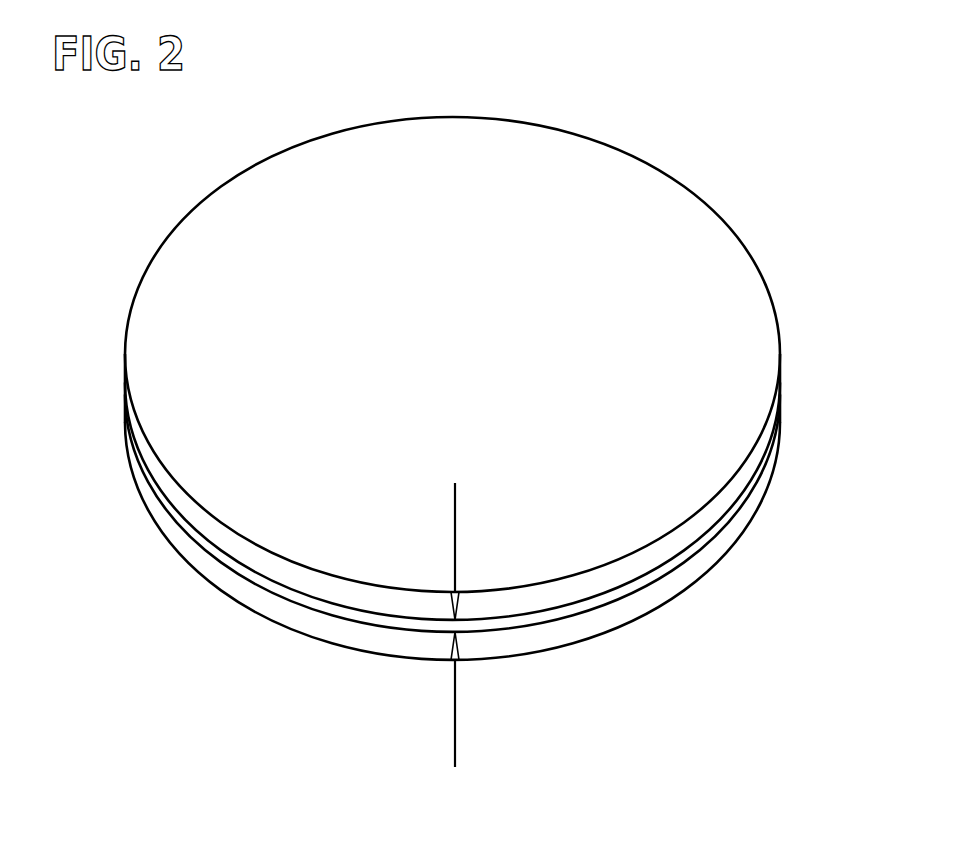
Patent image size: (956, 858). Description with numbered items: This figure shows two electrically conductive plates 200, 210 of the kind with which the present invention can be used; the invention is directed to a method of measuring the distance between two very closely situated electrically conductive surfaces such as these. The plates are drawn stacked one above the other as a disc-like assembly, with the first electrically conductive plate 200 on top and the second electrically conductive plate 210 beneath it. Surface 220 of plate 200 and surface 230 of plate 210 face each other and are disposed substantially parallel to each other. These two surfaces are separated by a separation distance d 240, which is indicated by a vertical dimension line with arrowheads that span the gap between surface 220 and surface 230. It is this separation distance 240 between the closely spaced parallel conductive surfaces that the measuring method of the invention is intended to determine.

The electrically conductive plate 200 is at (750, 315).
The electrically conductive plate 210 is at (717, 550).
The surface 220 is at (240, 567).
The surface 230 is at (258, 580).
The separation distance 240 is at (455, 525).